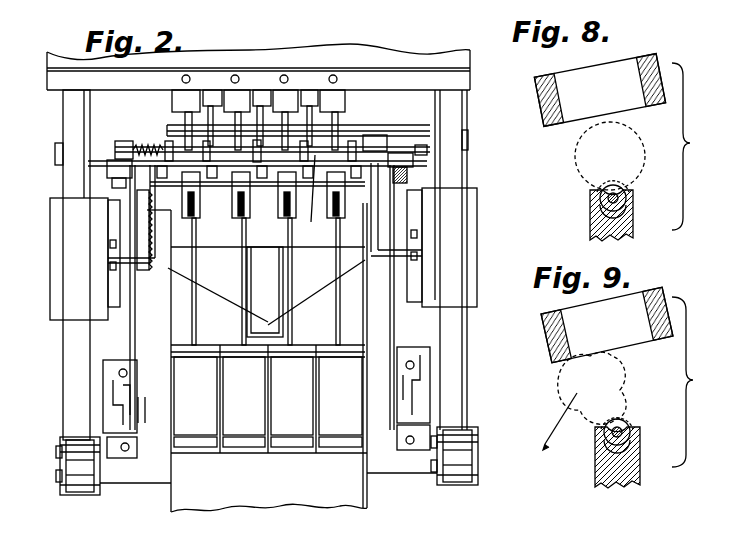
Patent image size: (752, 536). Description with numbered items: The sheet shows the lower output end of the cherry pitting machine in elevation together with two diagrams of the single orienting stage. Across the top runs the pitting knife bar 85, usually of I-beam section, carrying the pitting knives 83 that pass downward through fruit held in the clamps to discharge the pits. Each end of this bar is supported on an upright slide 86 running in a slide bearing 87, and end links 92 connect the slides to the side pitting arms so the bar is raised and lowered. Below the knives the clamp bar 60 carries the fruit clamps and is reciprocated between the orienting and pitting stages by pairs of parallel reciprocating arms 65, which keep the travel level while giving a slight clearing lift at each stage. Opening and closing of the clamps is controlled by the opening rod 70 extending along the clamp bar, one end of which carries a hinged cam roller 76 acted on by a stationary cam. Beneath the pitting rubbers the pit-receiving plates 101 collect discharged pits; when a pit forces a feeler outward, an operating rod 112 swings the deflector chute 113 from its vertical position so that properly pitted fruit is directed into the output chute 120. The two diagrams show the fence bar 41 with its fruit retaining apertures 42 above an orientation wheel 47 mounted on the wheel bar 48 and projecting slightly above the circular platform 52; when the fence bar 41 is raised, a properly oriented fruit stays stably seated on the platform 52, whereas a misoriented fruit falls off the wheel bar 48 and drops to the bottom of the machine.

In FIG. 2, the pitting knife bar 85 is at (406, 53).
In FIG. 2, the upright slides 86 is at (63, 109).
In FIG. 2, the pitting knives 83 is at (172, 122).
In FIG. 2, the opening rod 70 is at (363, 137).
In FIG. 2, the cam roller 76 is at (428, 147).
In FIG. 2, the pit-receiving plates 101 is at (232, 211).
In FIG. 2, the clamp bar 60 is at (311, 198).
In FIG. 2, the operating rod 112 is at (241, 270).
In FIG. 2, the reciprocating arms 65 is at (135, 337).
In FIG. 2, the slide bearings 87 is at (455, 247).
In FIG. 2, the deflector chute 113 is at (302, 409).
In FIG. 2, the output chute for properly pitted fruit 120 is at (272, 489).
In FIG. 2, the end links 92 is at (62, 462).
In FIG. 8, the fence bar 41 is at (657, 63).
In FIG. 9, the fence bar 41 is at (663, 300).
In FIG. 8, the fruit retaining apertures 42 is at (597, 99).
In FIG. 9, the fruit retaining apertures 42 is at (603, 334).
In FIG. 8, the orientation wheel 47 is at (605, 203).
In FIG. 9, the orientation wheel 47 is at (608, 441).
In FIG. 8, the wheel bar 48 is at (632, 218).
In FIG. 9, the wheel bar 48 is at (637, 461).
In FIG. 8, the circular platform 52 is at (594, 193).
In FIG. 9, the circular platform 52 is at (628, 428).